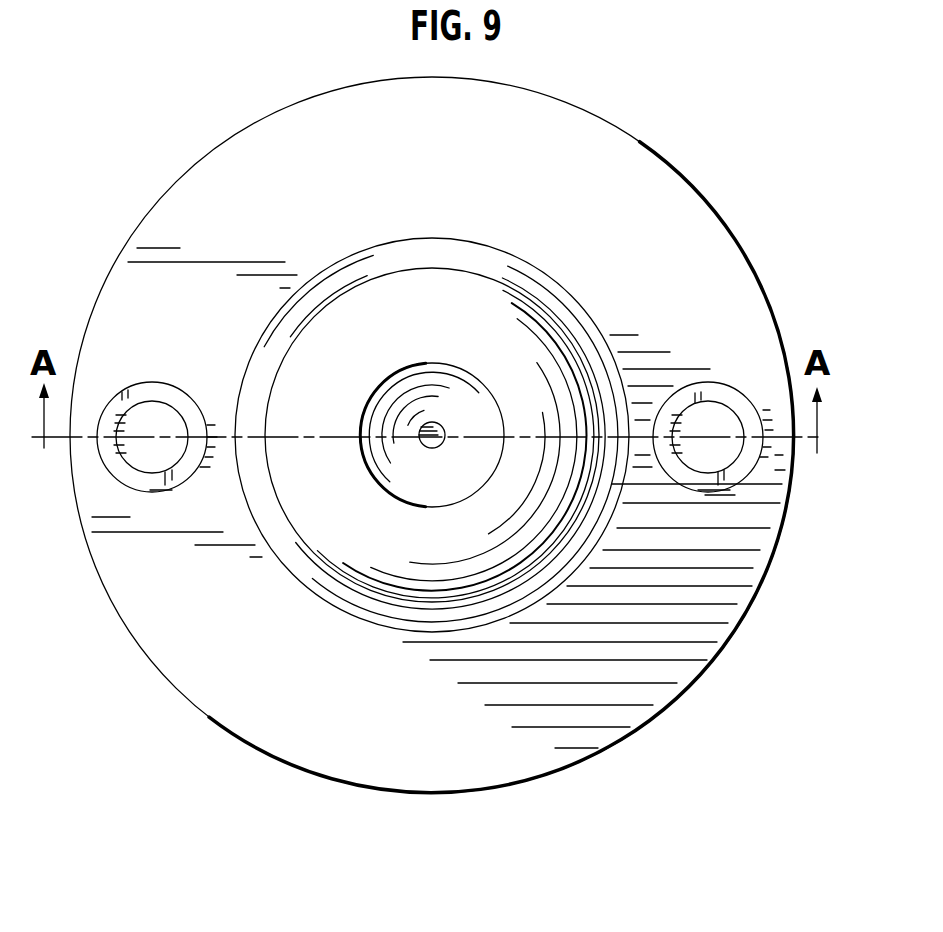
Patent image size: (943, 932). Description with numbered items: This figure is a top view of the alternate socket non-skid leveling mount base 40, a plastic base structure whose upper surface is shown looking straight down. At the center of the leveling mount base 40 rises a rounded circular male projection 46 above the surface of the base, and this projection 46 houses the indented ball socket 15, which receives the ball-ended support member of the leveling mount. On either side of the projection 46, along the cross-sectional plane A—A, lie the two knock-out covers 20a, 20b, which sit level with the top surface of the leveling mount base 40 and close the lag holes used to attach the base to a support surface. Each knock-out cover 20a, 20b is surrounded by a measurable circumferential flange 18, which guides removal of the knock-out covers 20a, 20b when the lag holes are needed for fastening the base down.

The indented socket 15 is at (378, 390).
The circumferential flange 18 is at (740, 473).
The knock-out cover 20a is at (150, 413).
The knock-out cover 20b is at (712, 418).
The leveling mount base 40 is at (743, 620).
The circular male projection 46 is at (565, 326).